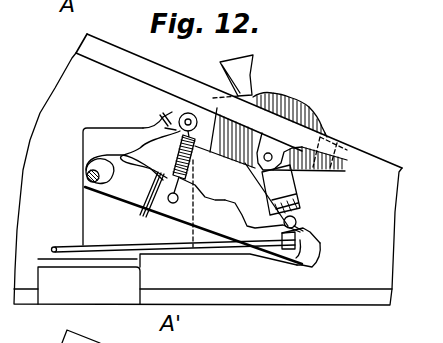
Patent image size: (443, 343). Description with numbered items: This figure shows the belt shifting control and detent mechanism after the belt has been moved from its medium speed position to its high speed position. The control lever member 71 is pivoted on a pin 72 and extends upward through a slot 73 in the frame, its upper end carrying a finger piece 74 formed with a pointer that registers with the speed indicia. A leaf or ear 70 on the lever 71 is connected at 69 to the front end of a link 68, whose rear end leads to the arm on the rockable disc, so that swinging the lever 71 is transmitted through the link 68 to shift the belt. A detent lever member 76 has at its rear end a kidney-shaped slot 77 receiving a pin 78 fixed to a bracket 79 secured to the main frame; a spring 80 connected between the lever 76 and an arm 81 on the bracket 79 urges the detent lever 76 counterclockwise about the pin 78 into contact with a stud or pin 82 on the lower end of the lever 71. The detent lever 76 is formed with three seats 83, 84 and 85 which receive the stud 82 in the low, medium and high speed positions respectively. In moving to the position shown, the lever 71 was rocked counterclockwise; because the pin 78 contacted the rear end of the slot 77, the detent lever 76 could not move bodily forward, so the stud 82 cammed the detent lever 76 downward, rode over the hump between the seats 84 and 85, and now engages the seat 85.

The link 68 is at (56, 246).
The connection 69 is at (302, 257).
The leaf or ear 70 is at (273, 258).
The control lever member 71 is at (311, 170).
The pin 72 is at (270, 153).
The slot 73 is at (340, 148).
The finger piece 74 is at (222, 73).
The detent lever member 76 is at (311, 258).
The kidney-shaped slot 77 is at (106, 196).
The pin 78 is at (86, 174).
The bracket 79 is at (83, 131).
The spring 80 is at (140, 128).
The arm 81 is at (163, 117).
The stud or pin 82 is at (300, 212).
The seat 83 is at (222, 202).
The seat 84 is at (246, 228).
The seat 85 is at (305, 233).